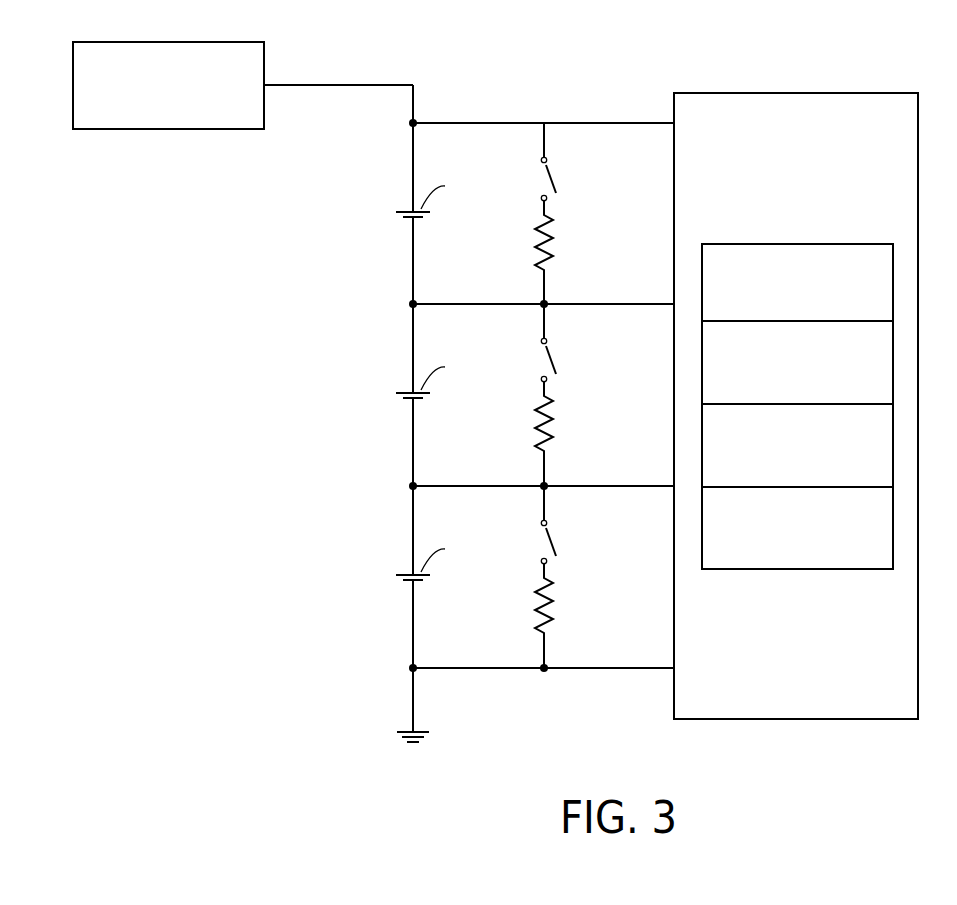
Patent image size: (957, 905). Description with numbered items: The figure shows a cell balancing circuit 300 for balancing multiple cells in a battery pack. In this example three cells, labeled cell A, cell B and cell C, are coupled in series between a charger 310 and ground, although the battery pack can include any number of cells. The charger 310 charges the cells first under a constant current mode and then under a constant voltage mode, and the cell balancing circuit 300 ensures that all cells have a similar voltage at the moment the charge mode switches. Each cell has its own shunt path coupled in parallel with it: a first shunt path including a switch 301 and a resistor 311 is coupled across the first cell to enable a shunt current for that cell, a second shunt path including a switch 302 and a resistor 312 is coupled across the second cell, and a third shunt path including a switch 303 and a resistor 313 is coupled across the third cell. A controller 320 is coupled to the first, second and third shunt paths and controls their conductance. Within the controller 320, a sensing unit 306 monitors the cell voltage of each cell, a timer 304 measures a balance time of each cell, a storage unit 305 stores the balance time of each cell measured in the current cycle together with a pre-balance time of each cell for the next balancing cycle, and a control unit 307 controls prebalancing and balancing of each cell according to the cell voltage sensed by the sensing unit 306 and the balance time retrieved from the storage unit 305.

The cell balancing circuit 300 is at (495, 392).
The charger 310 is at (140, 117).
The controller 320 is at (775, 192).
The switch 301 is at (549, 171).
The switch 302 is at (549, 352).
The switch 303 is at (549, 534).
The resistor 311 is at (553, 257).
The resistor 312 is at (553, 438).
The resistor 313 is at (553, 620).
The timer 304 is at (778, 315).
The storage unit 305 is at (776, 393).
The sensing unit 306 is at (778, 477).
The control unit 307 is at (780, 560).